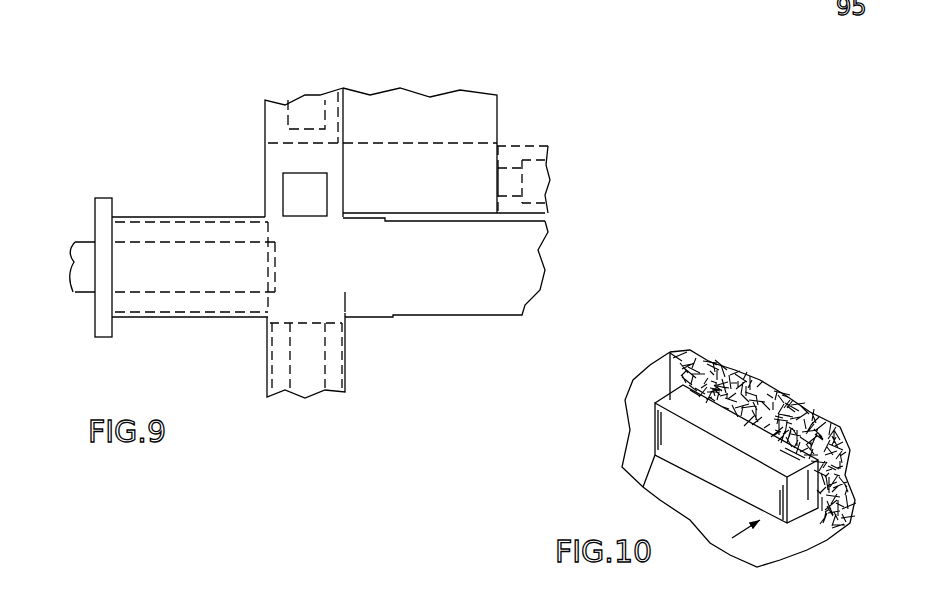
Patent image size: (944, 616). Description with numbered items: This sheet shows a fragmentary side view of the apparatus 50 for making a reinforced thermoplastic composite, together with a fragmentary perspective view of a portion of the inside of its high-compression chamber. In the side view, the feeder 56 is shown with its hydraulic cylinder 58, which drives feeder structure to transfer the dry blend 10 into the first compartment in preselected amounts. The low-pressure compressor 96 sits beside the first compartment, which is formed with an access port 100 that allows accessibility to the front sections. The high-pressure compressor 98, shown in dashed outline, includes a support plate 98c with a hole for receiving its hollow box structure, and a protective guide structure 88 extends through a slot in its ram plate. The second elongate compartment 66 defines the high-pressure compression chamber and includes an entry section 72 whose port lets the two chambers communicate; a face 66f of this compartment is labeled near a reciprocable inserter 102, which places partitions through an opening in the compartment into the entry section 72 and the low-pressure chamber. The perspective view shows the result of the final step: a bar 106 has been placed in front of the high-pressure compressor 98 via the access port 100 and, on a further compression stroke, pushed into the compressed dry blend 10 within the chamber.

In FIG. 9, the protective guide structure 88 is at (90, 294).
In FIG. 9, the support plate 98c is at (100, 197).
In FIG. 9, the high-pressure compressor 98 is at (147, 215).
In FIG. 9, the low-pressure compressor 96 is at (264, 119).
In FIG. 9, the hydraulic cylinder 58 is at (500, 113).
In FIG. 9, the access port 100 is at (295, 188).
In FIG. 9, the feeder 56 is at (530, 145).
In FIG. 9, the apparatus 50 is at (419, 149).
In FIG. 9, the second elongate compartment 66 is at (492, 315).
In FIG. 9, the face of body member 66f is at (424, 353).
In FIG. 9, the reciprocable inserter 102 is at (348, 366).
In FIG. 9, the entry section 72 is at (344, 300).
In FIG. 10, the dry blend 10 is at (742, 373).
In FIG. 10, the bar 106 is at (714, 490).